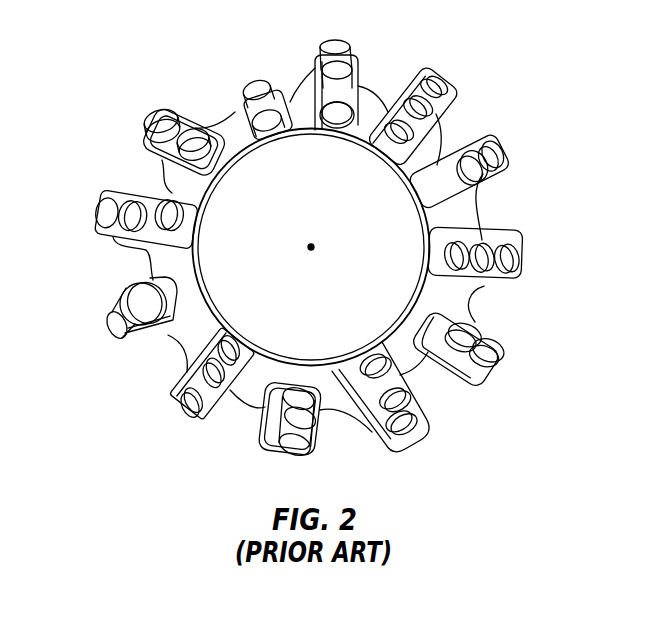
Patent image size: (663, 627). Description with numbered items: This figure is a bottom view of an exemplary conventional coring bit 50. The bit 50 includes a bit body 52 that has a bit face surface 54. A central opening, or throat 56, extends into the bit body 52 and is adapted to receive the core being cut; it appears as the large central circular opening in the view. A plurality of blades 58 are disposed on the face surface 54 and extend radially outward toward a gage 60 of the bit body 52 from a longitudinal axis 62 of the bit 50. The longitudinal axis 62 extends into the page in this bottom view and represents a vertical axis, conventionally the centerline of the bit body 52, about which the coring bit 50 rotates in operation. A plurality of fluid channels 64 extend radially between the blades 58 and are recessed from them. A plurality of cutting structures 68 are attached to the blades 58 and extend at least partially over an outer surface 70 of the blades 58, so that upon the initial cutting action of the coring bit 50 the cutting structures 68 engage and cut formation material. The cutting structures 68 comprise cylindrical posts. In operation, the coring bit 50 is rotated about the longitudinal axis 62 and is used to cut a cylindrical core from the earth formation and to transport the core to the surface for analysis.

The coring bit 50 is at (566, 164).
The bit body 52 is at (500, 289).
The bit face surface 54 is at (288, 390).
The throat 56 is at (412, 216).
The blades 58 is at (358, 78).
The gage 60 is at (150, 113).
The longitudinal axis 62 is at (313, 249).
The fluid channels 64 is at (437, 157).
The cutting structures 68 is at (180, 120).
The outer surface 70 is at (190, 243).